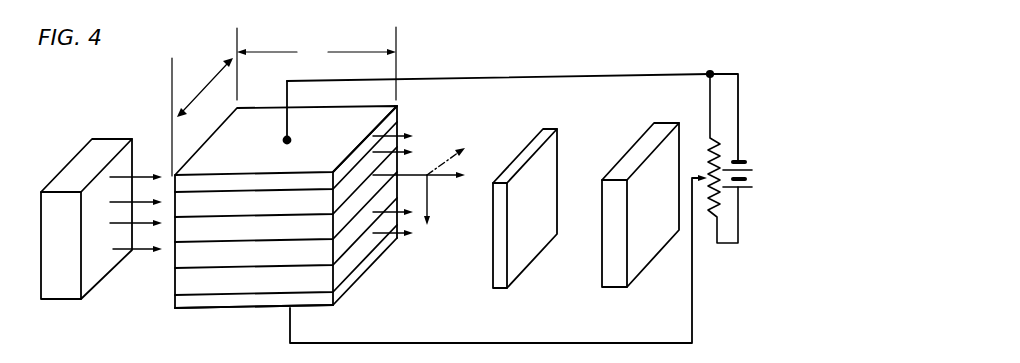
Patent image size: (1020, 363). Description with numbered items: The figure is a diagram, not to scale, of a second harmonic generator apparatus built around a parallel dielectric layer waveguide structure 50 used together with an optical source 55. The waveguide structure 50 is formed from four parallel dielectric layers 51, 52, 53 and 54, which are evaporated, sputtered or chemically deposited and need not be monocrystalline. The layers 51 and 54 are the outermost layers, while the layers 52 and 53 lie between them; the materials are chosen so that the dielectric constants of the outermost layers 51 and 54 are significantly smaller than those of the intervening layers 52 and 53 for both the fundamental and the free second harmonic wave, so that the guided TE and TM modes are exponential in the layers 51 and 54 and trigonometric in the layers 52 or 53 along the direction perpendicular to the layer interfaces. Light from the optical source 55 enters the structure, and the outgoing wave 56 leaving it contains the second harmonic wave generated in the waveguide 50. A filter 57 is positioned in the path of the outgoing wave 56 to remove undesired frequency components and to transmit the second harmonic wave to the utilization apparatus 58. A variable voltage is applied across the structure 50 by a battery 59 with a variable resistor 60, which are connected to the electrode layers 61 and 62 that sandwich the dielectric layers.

The parallel dielectric layer waveguide structure 50 is at (331, 34).
The dielectric layer 51 is at (286, 182).
The dielectric layer 52 is at (286, 207).
The dielectric layer 53 is at (286, 233).
The dielectric layer 54 is at (286, 261).
The optical source 55 is at (85, 157).
The outgoing wave 56 is at (417, 230).
The filter 57 is at (552, 157).
The utilization apparatus 58 is at (610, 258).
The battery 59 is at (733, 160).
The variable resistor 60 is at (702, 158).
The electrode layer 61 is at (392, 120).
The electrode layer 62 is at (195, 303).